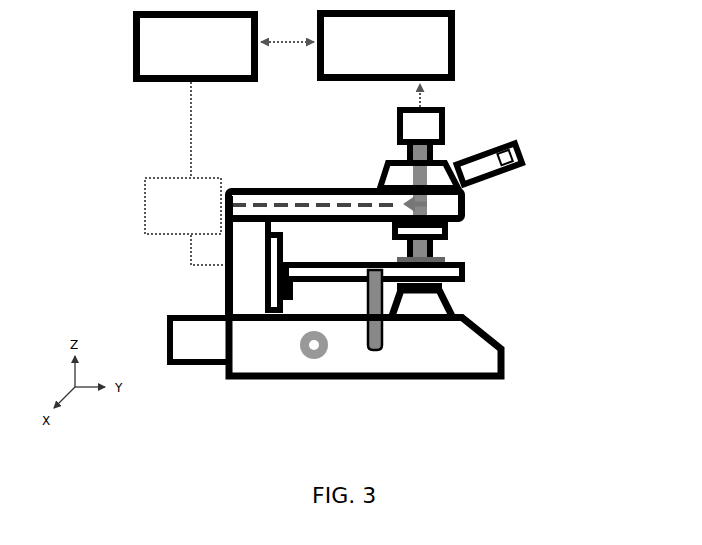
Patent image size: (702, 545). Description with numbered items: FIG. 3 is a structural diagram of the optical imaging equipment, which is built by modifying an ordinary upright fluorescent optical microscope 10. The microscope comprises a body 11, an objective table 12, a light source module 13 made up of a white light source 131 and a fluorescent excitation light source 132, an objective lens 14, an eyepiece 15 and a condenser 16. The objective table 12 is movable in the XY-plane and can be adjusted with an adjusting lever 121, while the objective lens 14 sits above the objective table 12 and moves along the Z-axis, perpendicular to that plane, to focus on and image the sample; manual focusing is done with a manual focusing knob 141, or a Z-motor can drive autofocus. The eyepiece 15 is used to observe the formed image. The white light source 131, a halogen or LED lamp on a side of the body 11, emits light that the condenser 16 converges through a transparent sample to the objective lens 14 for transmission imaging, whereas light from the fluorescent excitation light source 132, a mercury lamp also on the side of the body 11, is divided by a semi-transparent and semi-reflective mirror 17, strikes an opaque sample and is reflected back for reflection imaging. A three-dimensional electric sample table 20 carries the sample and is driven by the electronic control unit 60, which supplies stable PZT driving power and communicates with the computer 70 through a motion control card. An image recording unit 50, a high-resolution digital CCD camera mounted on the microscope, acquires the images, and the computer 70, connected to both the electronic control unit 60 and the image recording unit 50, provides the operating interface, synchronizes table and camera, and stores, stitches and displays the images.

The optical microscope 10 is at (323, 243).
The body 11 is at (452, 348).
The objective table 12 is at (466, 275).
The light source module 13 is at (135, 247).
The objective lens 14 is at (435, 246).
The eyepiece 15 is at (512, 158).
The condenser 16 is at (428, 303).
The semi-transparent and semi-reflective mirror 17 is at (432, 211).
The 3D electric sample table 20 is at (448, 262).
The image recording unit 50 is at (428, 128).
The electronic control unit 60 is at (162, 62).
The computer 70 is at (417, 53).
The adjusting lever 121 is at (383, 347).
The white light source 131 is at (193, 350).
The fluorescent excitation light source 132 is at (173, 208).
The manual focusing knob 141 is at (300, 335).